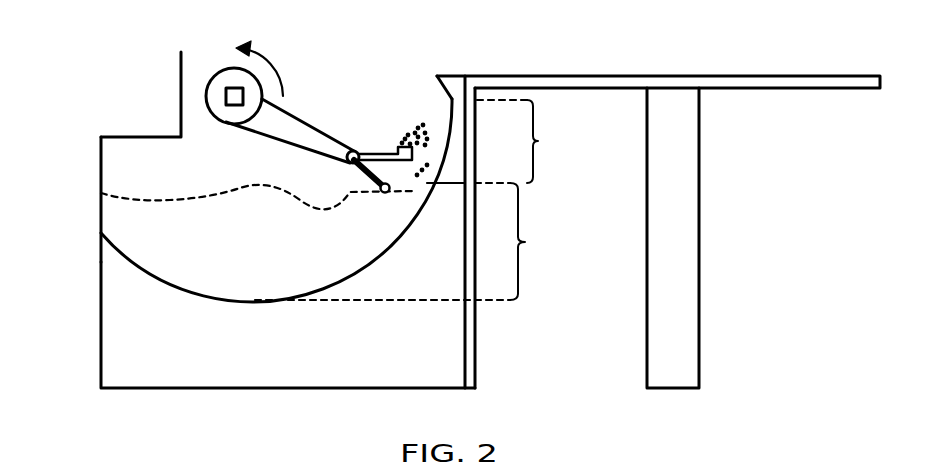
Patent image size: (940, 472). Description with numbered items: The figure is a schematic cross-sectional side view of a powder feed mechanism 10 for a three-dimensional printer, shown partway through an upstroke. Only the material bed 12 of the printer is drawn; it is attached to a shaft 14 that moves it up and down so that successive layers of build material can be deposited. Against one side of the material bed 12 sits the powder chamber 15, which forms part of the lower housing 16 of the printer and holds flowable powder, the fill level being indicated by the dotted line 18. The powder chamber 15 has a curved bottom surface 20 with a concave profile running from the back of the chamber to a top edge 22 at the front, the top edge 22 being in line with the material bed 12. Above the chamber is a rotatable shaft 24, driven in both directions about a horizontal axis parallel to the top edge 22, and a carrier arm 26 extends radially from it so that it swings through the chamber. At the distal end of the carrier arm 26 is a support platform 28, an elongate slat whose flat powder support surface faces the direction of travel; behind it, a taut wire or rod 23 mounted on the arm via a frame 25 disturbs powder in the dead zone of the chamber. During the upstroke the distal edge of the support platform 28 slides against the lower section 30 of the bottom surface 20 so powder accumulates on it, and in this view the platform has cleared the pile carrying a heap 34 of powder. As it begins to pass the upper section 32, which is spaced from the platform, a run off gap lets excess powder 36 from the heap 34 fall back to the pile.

The powder feed mechanism 10 is at (109, 83).
The material bed 12 is at (818, 82).
The shaft 14 is at (683, 273).
The powder chamber 15 is at (100, 172).
The lower housing 16 is at (100, 347).
The dotted line 18 is at (160, 196).
The curved bottom surface 20 is at (173, 288).
The top edge 22 is at (457, 82).
The wire or rod 23 is at (383, 193).
The rotatable shaft 24 is at (232, 88).
The frame 25 is at (362, 166).
The carrier arm 26 is at (280, 127).
The support platform 28 is at (398, 153).
The lower section 30 is at (411, 241).
The upper section 32 is at (526, 141).
The heap 34 is at (412, 130).
The excess powder 36 is at (417, 176).